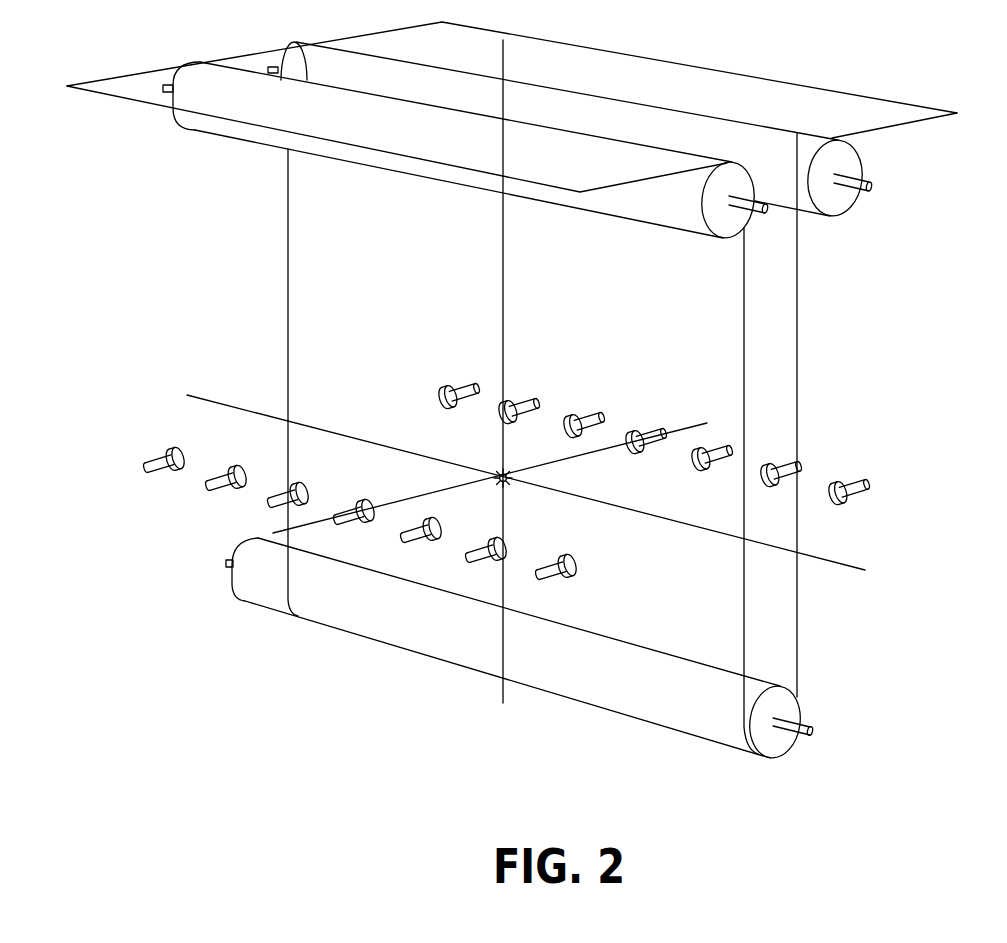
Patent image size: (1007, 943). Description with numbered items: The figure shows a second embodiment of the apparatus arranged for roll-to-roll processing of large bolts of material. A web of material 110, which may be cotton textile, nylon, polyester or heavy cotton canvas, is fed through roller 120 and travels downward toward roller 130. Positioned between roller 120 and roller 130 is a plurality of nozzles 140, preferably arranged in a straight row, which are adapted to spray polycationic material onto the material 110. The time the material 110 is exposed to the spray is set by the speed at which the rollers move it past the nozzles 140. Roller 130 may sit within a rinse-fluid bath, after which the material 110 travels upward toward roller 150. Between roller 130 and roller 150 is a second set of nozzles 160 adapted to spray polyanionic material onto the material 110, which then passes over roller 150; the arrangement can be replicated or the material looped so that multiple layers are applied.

The material 110 is at (100, 93).
The roller 120 is at (745, 213).
The roller 130 is at (793, 747).
The nozzles 140 is at (203, 483).
The roller 150 is at (863, 158).
The nozzles 160 is at (878, 484).